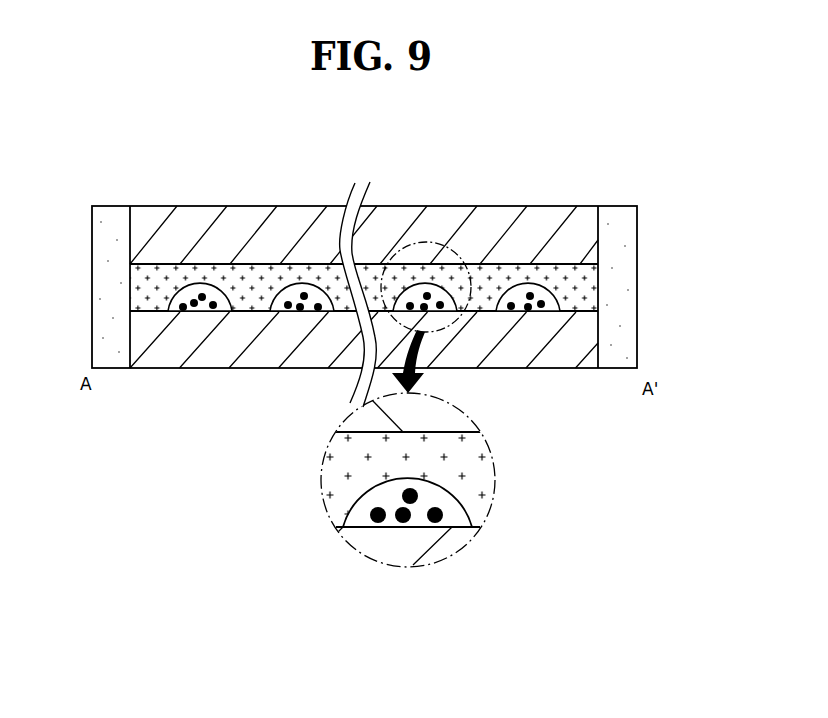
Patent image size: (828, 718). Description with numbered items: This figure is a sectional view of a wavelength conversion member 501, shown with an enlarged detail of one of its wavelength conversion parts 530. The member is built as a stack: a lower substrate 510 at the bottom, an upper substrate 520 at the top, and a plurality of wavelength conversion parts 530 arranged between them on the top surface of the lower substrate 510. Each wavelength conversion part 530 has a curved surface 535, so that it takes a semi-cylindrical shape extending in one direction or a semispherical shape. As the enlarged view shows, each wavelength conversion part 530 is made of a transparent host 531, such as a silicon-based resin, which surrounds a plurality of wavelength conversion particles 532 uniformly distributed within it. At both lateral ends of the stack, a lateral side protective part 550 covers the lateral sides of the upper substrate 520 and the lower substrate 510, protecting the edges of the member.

The light source module 501 is at (121, 151).
The lower substrate 510 is at (587, 345).
The upper substrate 520 is at (587, 233).
The wavelength conversion parts 530 is at (457, 491).
The host 531 is at (395, 524).
The wavelength conversion particles 532 is at (437, 545).
The curved surface 535 is at (458, 505).
The lateral side protective part 550 is at (108, 286).